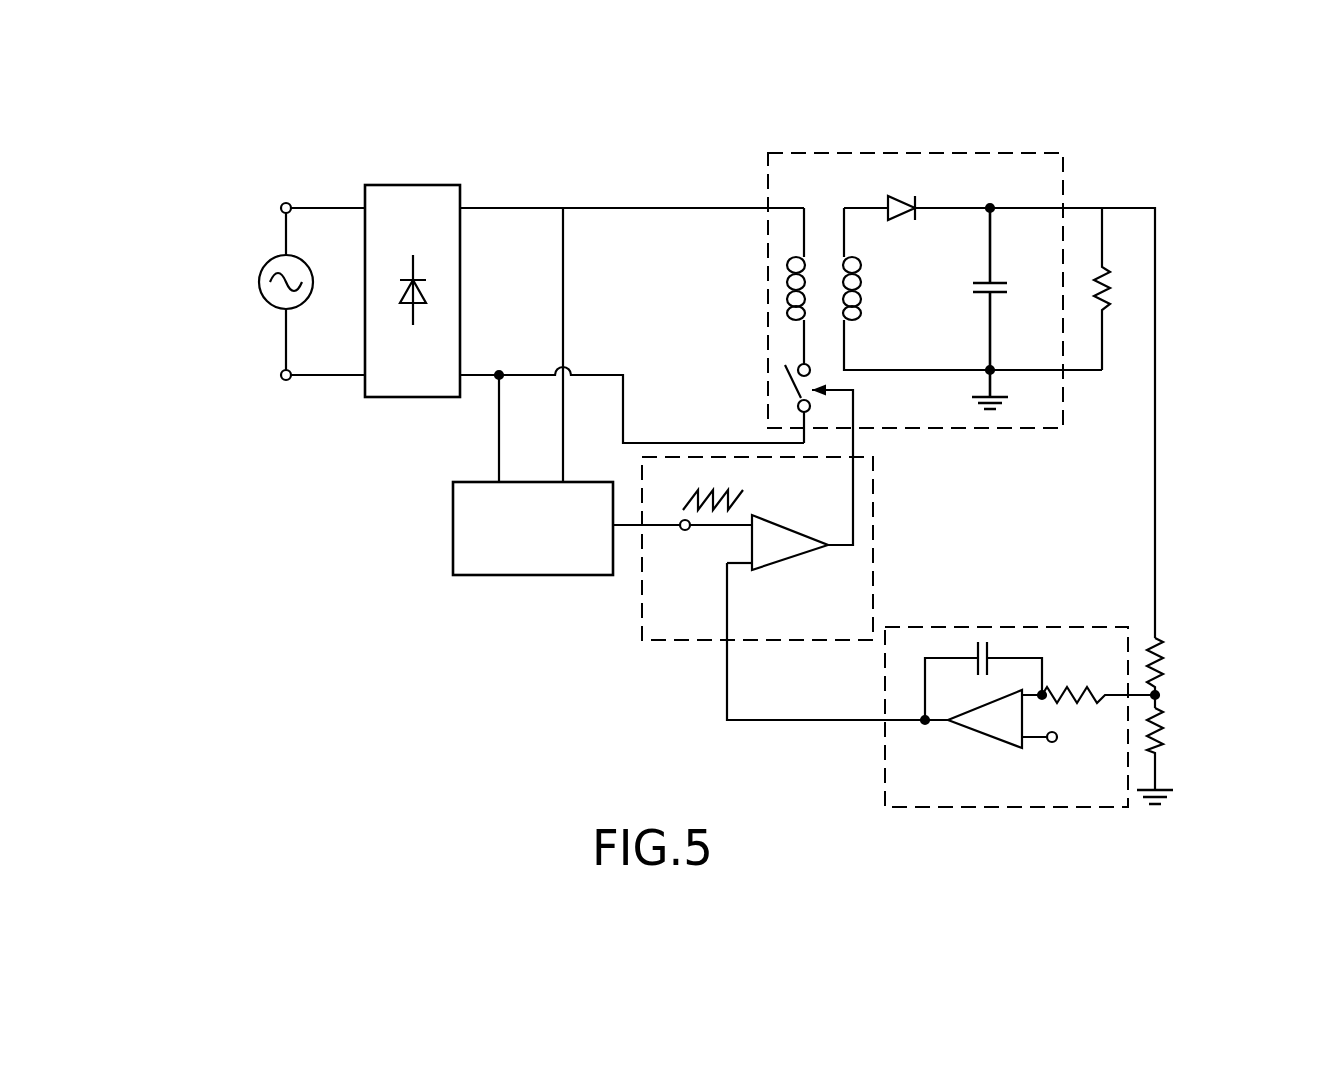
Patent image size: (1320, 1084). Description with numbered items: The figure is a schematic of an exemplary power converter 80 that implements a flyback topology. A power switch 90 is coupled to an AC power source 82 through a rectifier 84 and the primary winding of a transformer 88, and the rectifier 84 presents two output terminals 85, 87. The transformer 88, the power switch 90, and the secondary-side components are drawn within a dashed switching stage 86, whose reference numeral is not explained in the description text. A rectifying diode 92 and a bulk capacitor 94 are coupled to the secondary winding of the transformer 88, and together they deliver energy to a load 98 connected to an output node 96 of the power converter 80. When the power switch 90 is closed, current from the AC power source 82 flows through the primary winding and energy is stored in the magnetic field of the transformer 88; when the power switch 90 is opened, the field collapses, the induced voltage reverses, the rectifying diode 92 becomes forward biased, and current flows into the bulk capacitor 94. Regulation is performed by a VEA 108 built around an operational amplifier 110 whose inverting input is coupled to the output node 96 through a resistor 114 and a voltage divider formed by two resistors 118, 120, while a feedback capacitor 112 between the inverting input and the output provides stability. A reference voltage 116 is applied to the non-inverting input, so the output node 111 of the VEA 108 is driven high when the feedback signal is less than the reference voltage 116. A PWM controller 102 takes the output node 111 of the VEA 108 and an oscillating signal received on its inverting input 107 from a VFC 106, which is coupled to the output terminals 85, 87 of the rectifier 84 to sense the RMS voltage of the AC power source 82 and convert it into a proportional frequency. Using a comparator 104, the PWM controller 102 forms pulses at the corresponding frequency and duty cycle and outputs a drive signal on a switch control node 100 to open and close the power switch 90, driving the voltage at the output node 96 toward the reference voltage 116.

The power converter 80 is at (223, 422).
The AC power source 82 is at (262, 270).
The rectifier 84 is at (415, 185).
The output terminal of the rectifier 85 is at (478, 380).
The switching transformer stage 86 is at (800, 153).
The output terminal of the rectifier 87 is at (497, 200).
The transformer 88 is at (785, 290).
The power switch 90 is at (775, 385).
The rectifying diode 92 is at (912, 190).
The bulk capacitor 94 is at (1000, 275).
The output node 96 is at (1092, 200).
The load 98 is at (1117, 290).
The switch control node 100 is at (858, 443).
The PWM controller 102 is at (642, 607).
The comparator 104 is at (796, 524).
The VFC 106 is at (453, 527).
The inverting input 107 is at (712, 530).
The VEA 108 is at (932, 808).
The operational amplifier 110 is at (945, 723).
The output node 111 is at (767, 722).
The feedback capacitor 112 is at (995, 640).
The resistor 114 is at (1082, 672).
The reference voltage 116 is at (1070, 745).
The resistor 118 is at (1175, 650).
The resistor 120 is at (1185, 725).